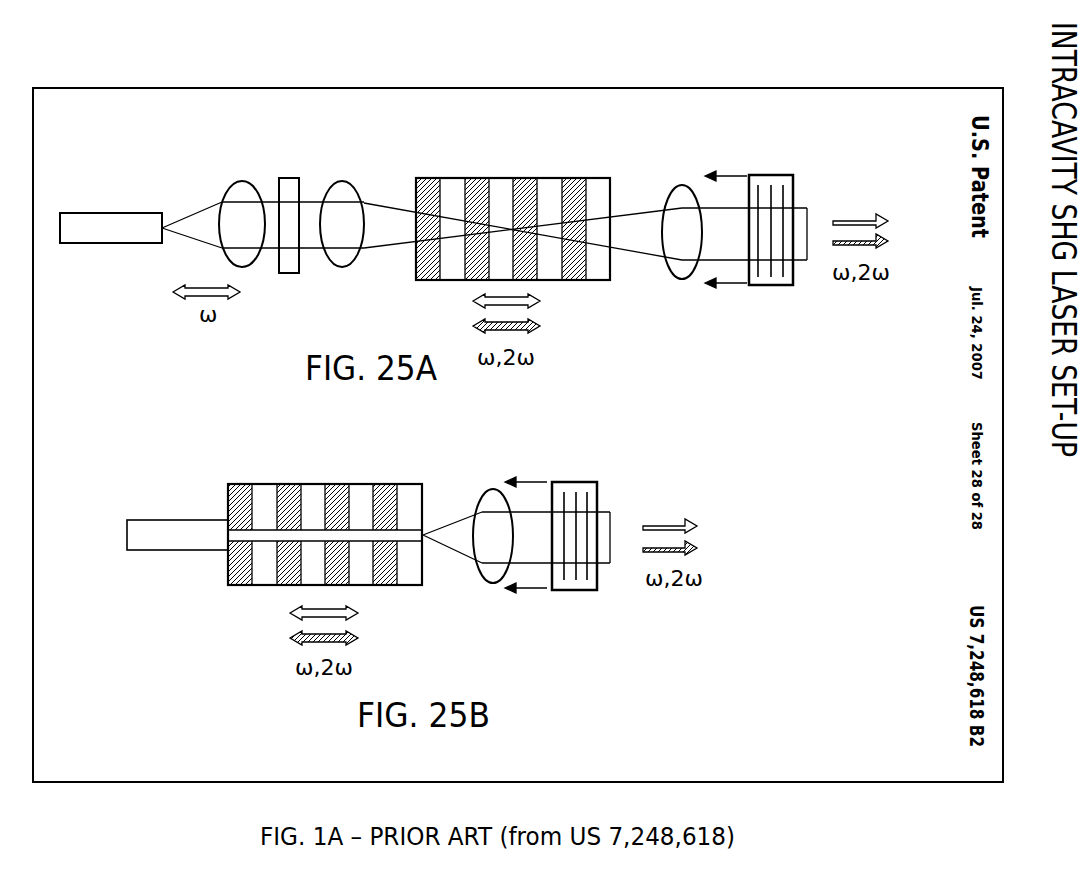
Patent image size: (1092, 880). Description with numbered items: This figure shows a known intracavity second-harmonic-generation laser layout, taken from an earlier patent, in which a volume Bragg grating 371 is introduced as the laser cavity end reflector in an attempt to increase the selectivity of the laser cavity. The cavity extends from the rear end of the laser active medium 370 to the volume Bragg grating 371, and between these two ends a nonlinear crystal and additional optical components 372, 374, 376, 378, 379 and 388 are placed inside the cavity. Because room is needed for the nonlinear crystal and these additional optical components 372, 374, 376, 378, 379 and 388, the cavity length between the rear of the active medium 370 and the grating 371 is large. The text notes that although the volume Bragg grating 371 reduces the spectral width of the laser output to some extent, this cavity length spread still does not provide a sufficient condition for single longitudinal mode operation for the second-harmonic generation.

The laser active medium 370 is at (85, 213).
The collimating lens 372 is at (236, 182).
The optical plate 374 is at (289, 178).
The focusing lens 376 is at (346, 181).
The periodically poled nonlinear crystal 378 is at (492, 178).
The collimating lens 379 is at (683, 186).
The volume Bragg grating 371 is at (767, 175).
The periodically poled waveguide crystal 388 is at (305, 484).